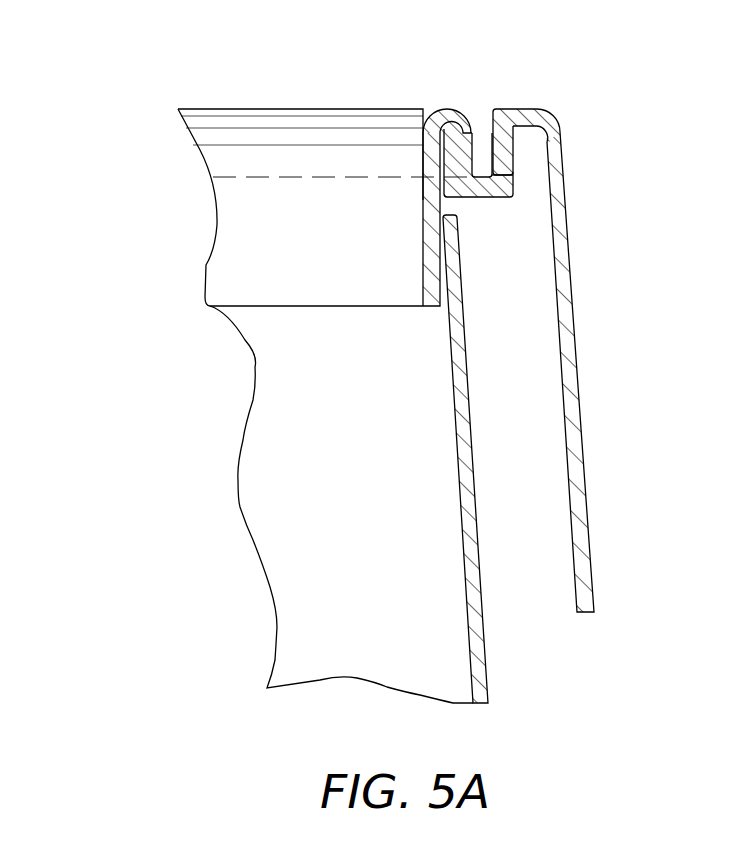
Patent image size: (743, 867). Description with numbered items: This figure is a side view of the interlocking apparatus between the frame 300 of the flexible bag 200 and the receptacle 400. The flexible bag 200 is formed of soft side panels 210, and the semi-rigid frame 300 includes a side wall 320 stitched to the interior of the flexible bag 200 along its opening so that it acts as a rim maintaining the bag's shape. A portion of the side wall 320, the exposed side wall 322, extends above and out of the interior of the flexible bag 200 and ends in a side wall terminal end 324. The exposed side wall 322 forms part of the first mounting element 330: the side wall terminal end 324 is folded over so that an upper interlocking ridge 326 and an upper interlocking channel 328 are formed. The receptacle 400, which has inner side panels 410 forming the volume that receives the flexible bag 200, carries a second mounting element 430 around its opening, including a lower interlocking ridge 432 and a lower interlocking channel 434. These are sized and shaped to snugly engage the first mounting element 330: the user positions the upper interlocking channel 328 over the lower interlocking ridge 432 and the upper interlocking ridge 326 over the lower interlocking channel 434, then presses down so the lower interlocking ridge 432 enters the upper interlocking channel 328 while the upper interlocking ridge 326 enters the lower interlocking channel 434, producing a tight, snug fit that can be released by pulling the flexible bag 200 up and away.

The flexible bag 200 is at (350, 478).
The side panel 210 is at (465, 565).
The frame 300 is at (452, 179).
The side wall 320 is at (430, 235).
The exposed side wall 322 is at (430, 168).
The side wall terminal end 324 is at (478, 186).
The upper interlocking ridge 326 is at (506, 124).
The upper interlocking channel 328 is at (476, 128).
The first mounting element 330 is at (442, 122).
The receptacle 400 is at (572, 320).
The inner side panel 410 is at (578, 333).
The second mounting element 430 is at (553, 101).
The lower interlocking ridge 432 is at (451, 125).
The lower interlocking channel 434 is at (492, 157).